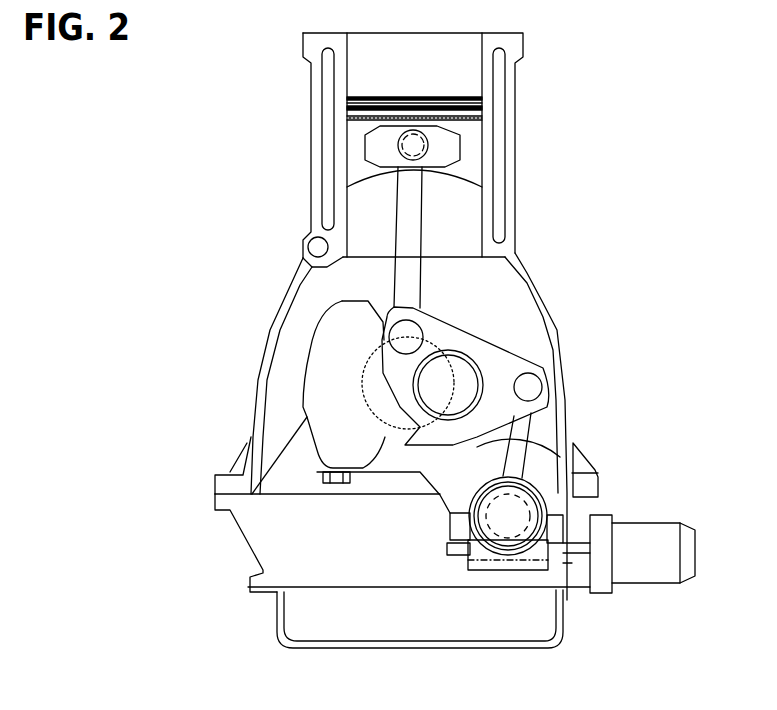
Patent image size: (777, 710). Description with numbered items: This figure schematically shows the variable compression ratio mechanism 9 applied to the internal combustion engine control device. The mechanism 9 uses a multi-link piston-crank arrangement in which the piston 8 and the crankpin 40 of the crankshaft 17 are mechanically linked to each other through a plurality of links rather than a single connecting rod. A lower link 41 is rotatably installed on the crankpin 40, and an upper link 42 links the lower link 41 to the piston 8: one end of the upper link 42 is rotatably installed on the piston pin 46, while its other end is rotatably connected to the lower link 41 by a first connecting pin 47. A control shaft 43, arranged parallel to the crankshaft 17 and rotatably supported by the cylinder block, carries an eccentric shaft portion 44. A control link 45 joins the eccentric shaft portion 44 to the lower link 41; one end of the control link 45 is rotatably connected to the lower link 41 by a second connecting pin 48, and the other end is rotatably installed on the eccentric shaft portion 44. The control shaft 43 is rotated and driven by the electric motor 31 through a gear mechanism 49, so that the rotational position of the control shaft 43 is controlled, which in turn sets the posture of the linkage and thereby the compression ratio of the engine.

The piston 8 is at (470, 155).
The variable compression ratio mechanism 9 is at (518, 310).
The crankshaft 17 is at (327, 402).
The electric motor 31 is at (647, 573).
The crankpin 40 is at (427, 380).
The lower link 41 is at (505, 358).
The upper link 42 is at (397, 213).
The control shaft 43 is at (528, 510).
The eccentric shaft portion 44 is at (583, 460).
The control link 45 is at (532, 422).
The piston pin 46 is at (397, 146).
The first connecting pin 47 is at (404, 336).
The second connecting pin 48 is at (530, 387).
The gear mechanism 49 is at (502, 569).